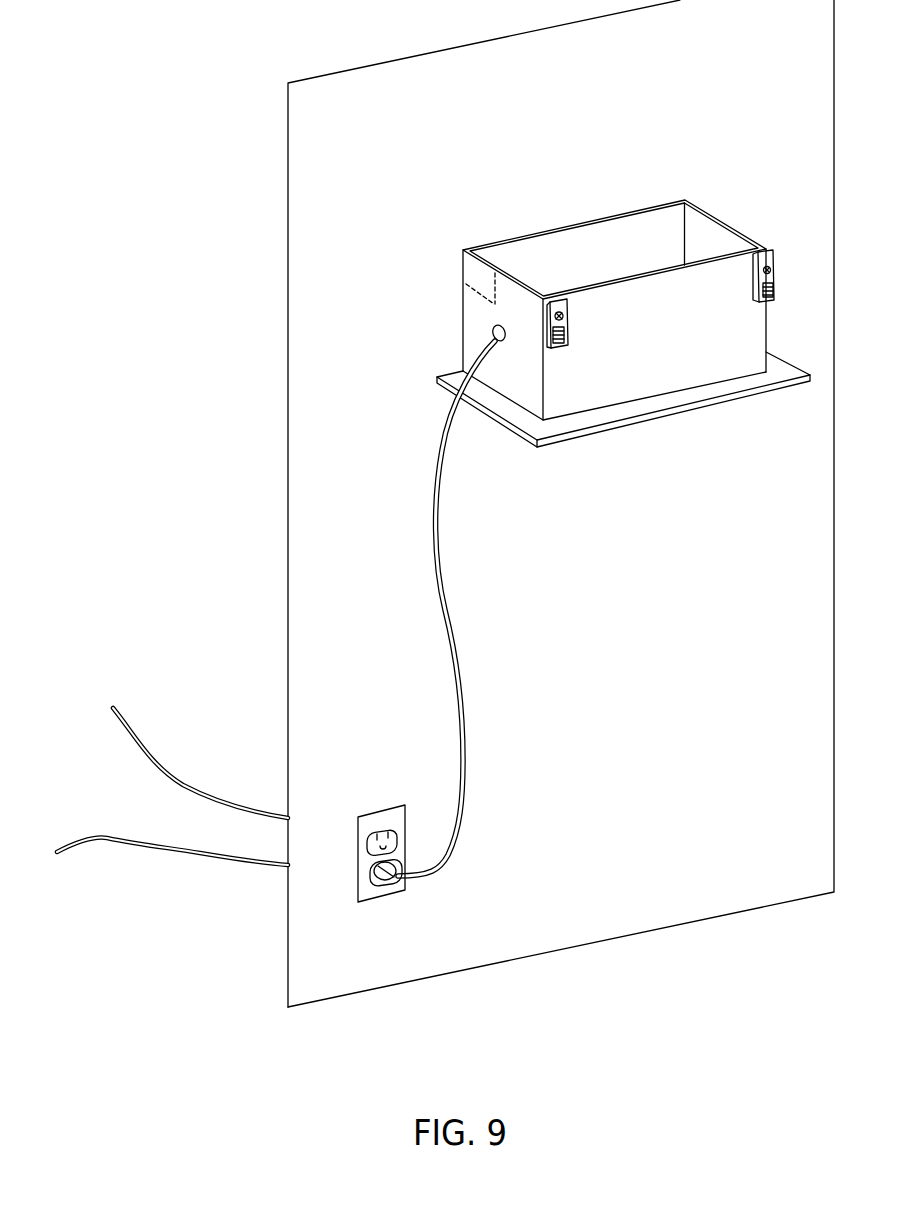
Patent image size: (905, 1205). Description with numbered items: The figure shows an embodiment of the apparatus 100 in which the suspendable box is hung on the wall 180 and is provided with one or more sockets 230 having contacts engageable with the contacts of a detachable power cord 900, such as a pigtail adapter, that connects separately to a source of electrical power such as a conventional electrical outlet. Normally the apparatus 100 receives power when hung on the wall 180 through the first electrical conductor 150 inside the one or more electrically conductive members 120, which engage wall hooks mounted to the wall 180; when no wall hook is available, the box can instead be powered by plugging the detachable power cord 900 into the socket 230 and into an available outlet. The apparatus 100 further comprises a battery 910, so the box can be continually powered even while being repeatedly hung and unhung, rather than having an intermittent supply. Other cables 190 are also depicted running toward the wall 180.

The apparatus 100 is at (543, 194).
The electrically conductive member 120 is at (568, 322).
The first electrical conductor 150 is at (770, 275).
The wall 180 is at (561, 503).
The cables 190 is at (166, 705).
The socket 230 is at (492, 326).
The detachable power cord 900 is at (457, 653).
The battery 910 is at (462, 268).